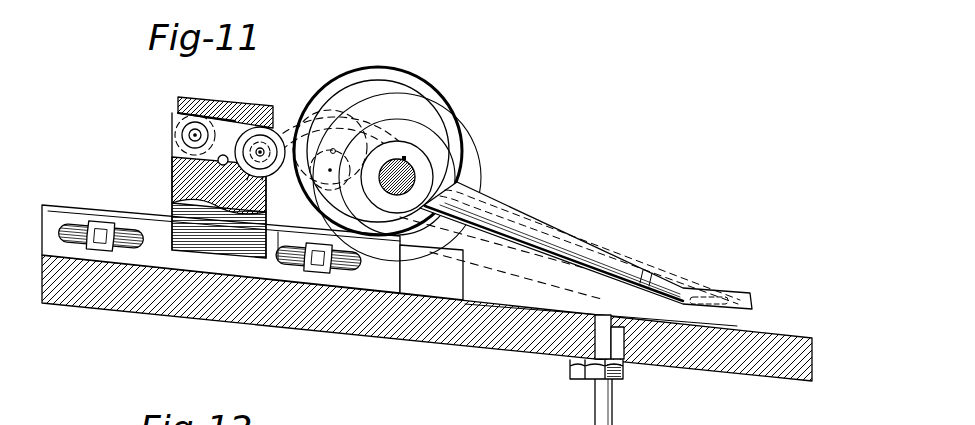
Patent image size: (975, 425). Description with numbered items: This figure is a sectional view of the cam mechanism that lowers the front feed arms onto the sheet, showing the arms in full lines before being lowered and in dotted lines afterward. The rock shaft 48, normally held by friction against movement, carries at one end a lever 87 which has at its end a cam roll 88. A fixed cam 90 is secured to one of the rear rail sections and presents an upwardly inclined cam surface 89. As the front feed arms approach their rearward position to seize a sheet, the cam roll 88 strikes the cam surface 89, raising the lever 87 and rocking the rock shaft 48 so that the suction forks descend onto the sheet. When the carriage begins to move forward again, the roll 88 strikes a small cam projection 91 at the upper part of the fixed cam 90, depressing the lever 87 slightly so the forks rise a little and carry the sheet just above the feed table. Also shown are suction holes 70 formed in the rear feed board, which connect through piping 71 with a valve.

The rock shaft 48 is at (413, 168).
The suction holes 70 is at (640, 365).
The piping 71 is at (613, 412).
The lever 87 is at (362, 148).
The cam roll 88 is at (241, 151).
The cam surface 89 is at (220, 161).
The fixed cam 90 is at (185, 257).
The cam projection 91 is at (228, 107).